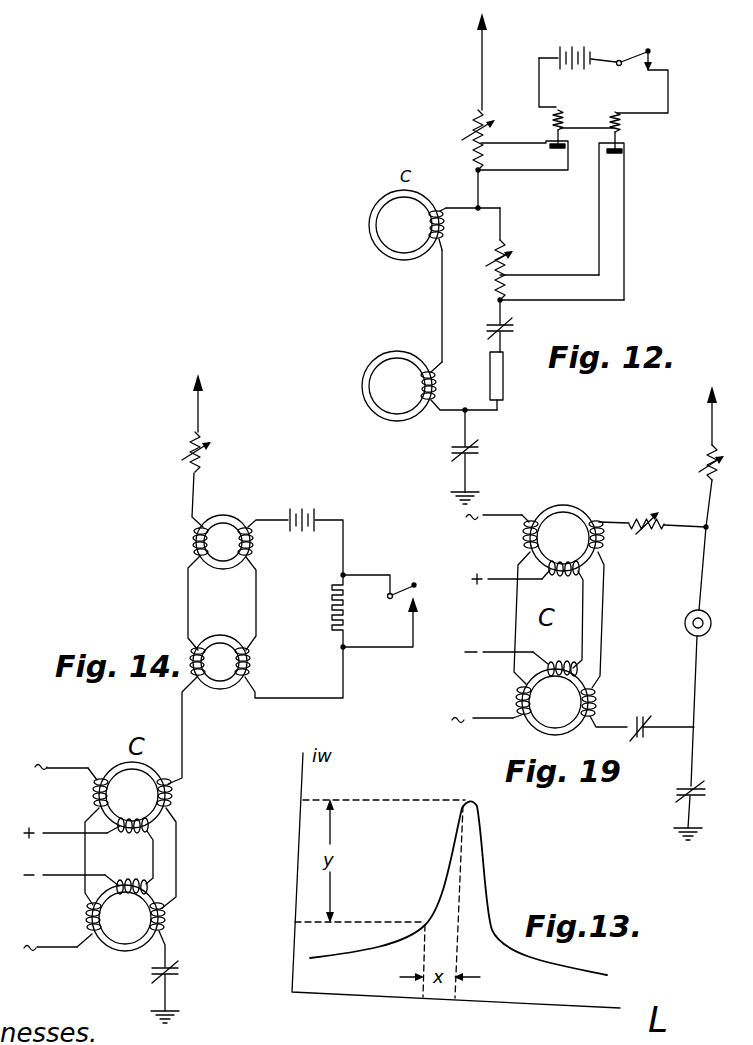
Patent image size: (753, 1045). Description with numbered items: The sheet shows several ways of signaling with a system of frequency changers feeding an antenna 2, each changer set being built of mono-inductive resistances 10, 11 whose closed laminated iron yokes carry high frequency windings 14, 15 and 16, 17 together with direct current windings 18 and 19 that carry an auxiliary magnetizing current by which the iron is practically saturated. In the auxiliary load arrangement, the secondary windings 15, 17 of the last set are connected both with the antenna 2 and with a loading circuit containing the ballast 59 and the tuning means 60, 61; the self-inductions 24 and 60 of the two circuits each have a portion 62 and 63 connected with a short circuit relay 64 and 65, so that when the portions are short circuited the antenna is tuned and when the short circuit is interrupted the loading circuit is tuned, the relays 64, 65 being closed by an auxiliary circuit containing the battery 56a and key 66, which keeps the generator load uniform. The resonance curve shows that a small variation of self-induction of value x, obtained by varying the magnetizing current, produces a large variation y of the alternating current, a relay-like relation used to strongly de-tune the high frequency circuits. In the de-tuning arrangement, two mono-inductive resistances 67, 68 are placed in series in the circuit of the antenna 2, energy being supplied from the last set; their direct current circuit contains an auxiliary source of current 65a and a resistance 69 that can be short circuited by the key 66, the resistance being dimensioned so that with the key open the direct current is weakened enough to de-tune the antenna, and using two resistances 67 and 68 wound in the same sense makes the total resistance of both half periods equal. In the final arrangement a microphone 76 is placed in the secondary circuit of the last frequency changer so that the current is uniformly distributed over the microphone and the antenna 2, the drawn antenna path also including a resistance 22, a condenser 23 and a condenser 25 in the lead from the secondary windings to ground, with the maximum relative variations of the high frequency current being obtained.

In FIG. 12, the antenna 2 is at (483, 68).
In FIG. 19, the antenna 2 is at (709, 425).
In FIG. 14, the antenna 2 is at (196, 405).
In FIG. 12, the mono-inductive resistance 10 is at (404, 225).
In FIG. 19, the mono-inductive resistance 10 is at (563, 538).
In FIG. 14, the mono-inductive resistance 10 is at (132, 795).
In FIG. 12, the mono-inductive resistance 11 is at (397, 386).
In FIG. 19, the mono-inductive resistance 11 is at (555, 702).
In FIG. 14, the mono-inductive resistance 11 is at (125, 918).
In FIG. 19, the winding 14 is at (523, 540).
In FIG. 14, the winding 14 is at (93, 790).
In FIG. 12, the winding 15 is at (446, 229).
In FIG. 19, the winding 15 is at (603, 544).
In FIG. 14, the winding 15 is at (172, 797).
In FIG. 19, the winding 16 is at (516, 698).
In FIG. 14, the winding 16 is at (87, 917).
In FIG. 12, the winding 17 is at (438, 388).
In FIG. 19, the winding 17 is at (598, 701).
In FIG. 14, the winding 17 is at (165, 920).
In FIG. 19, the winding 18 is at (566, 576).
In FIG. 14, the winding 18 is at (136, 833).
In FIG. 19, the winding 19 is at (562, 658).
In FIG. 14, the winding 19 is at (132, 878).
In FIG. 19, the variable resistance 22 is at (653, 513).
In FIG. 19, the variable condenser 23 is at (662, 716).
In FIG. 12, the self-induction 24 is at (470, 124).
In FIG. 19, the self-induction 24 is at (700, 462).
In FIG. 12, the variable condenser 25 is at (479, 452).
In FIG. 19, the variable condenser 25 is at (676, 791).
In FIG. 14, the variable condenser 25 is at (165, 992).
In FIG. 12, the battery 56a is at (577, 68).
In FIG. 12, the ballast 59 is at (503, 373).
In FIG. 12, the tuning means 60 is at (492, 259).
In FIG. 12, the tuning means 61 is at (485, 328).
In FIG. 12, the portion of self-induction 62 is at (483, 157).
In FIG. 12, the portion of self-induction 63 is at (504, 288).
In FIG. 12, the short circuit relay 64 is at (560, 111).
In FIG. 12, the short circuit relay 65 is at (623, 105).
In FIG. 14, the auxiliary source of current 65a is at (316, 533).
In FIG. 12, the key 66 is at (643, 76).
In FIG. 14, the key 66 is at (380, 605).
In FIG. 14, the mono-inductive resistance 67 is at (229, 528).
In FIG. 14, the mono-inductive resistance 68 is at (216, 648).
In FIG. 14, the resistance 69 is at (347, 612).
In FIG. 19, the microphone 76 is at (685, 624).